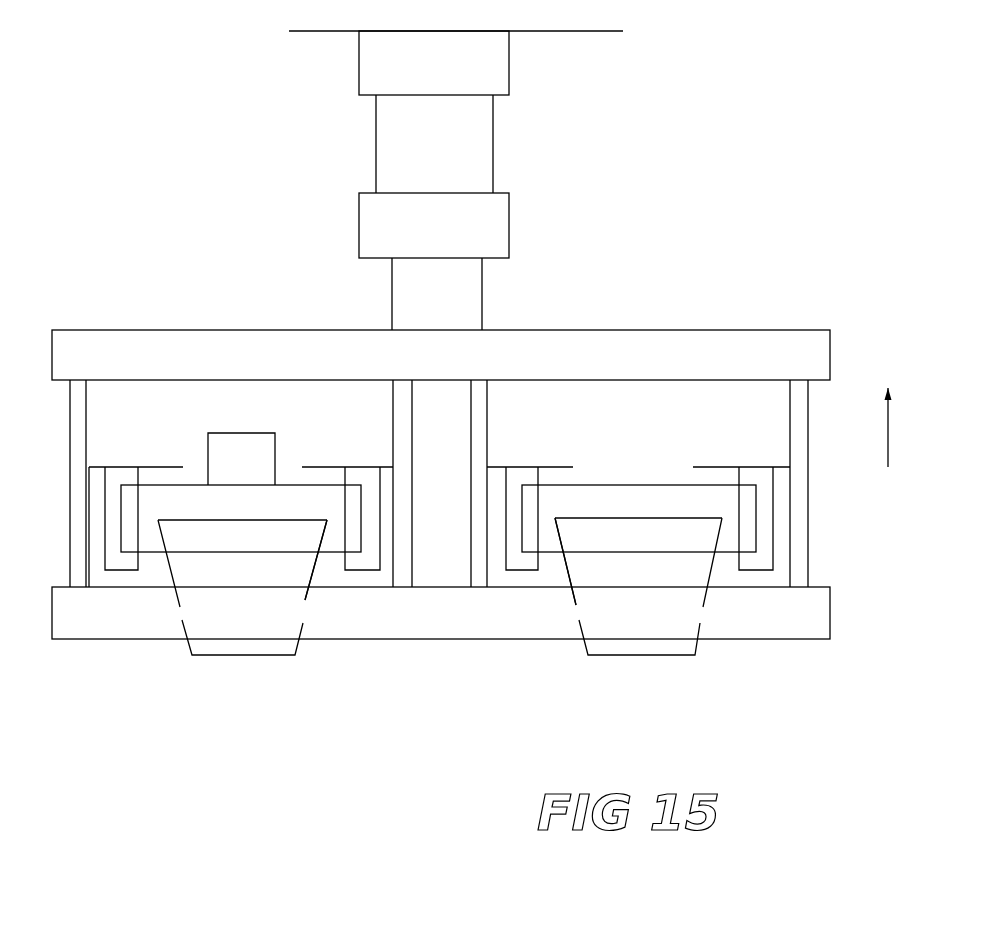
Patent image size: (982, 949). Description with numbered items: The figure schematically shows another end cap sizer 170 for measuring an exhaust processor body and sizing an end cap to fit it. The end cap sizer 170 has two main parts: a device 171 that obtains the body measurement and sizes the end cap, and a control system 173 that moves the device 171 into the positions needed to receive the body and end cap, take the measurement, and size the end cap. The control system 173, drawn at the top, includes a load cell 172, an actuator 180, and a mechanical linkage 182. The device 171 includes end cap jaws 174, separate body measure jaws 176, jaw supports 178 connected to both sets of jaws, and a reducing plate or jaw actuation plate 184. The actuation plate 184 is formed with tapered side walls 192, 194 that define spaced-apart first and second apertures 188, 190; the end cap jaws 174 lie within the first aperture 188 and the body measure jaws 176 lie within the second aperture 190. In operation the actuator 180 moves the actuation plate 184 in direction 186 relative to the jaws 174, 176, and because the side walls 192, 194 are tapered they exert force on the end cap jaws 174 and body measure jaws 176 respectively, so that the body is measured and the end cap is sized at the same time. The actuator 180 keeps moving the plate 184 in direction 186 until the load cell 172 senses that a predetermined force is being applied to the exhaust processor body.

The end cap sizer 170 is at (127, 152).
The device 171 is at (348, 325).
The load cell 172 is at (255, 432).
The control system 173 is at (333, 133).
The end cap jaws 174 is at (580, 517).
The body measure jaws 176 is at (193, 518).
The jaw supports 178 is at (124, 573).
The actuator 180 is at (498, 138).
The mechanical linkage 182 is at (508, 346).
The jaw actuation plate 184 is at (820, 598).
The direction 186 is at (888, 437).
The first aperture 188 is at (700, 625).
The second aperture 190 is at (192, 628).
The tapered side wall 192 is at (576, 597).
The tapered side wall 194 is at (307, 597).